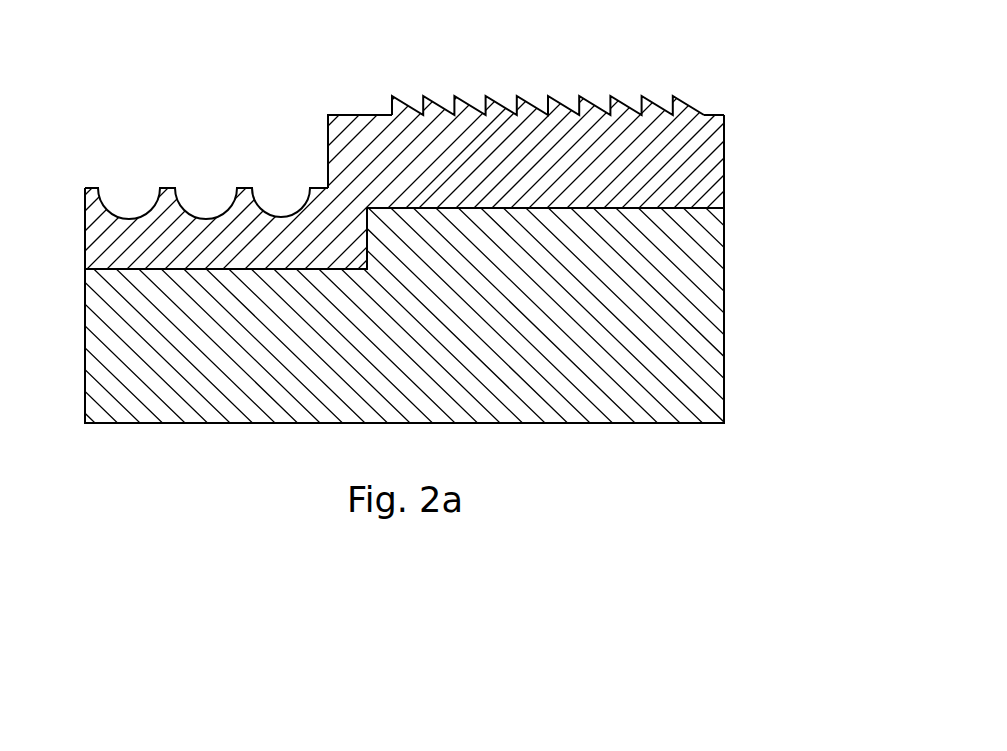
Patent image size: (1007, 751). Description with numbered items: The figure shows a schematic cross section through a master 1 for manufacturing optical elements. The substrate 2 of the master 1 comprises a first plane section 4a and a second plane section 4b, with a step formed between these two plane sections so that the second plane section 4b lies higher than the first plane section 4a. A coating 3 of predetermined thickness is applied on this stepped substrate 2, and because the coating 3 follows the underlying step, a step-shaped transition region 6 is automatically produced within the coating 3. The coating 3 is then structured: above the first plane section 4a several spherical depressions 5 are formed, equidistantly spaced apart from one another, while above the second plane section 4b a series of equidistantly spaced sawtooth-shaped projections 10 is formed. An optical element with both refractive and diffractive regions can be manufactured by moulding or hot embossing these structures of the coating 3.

The master 1 is at (786, 58).
The substrate 2 is at (693, 390).
The coating 3 is at (707, 163).
The first plane section 4a is at (210, 272).
The second plane section 4b is at (606, 213).
The spherical depressions 5 is at (128, 186).
The step-shaped transition region 6 is at (328, 141).
The sawtooth-shaped projections 10 is at (522, 107).